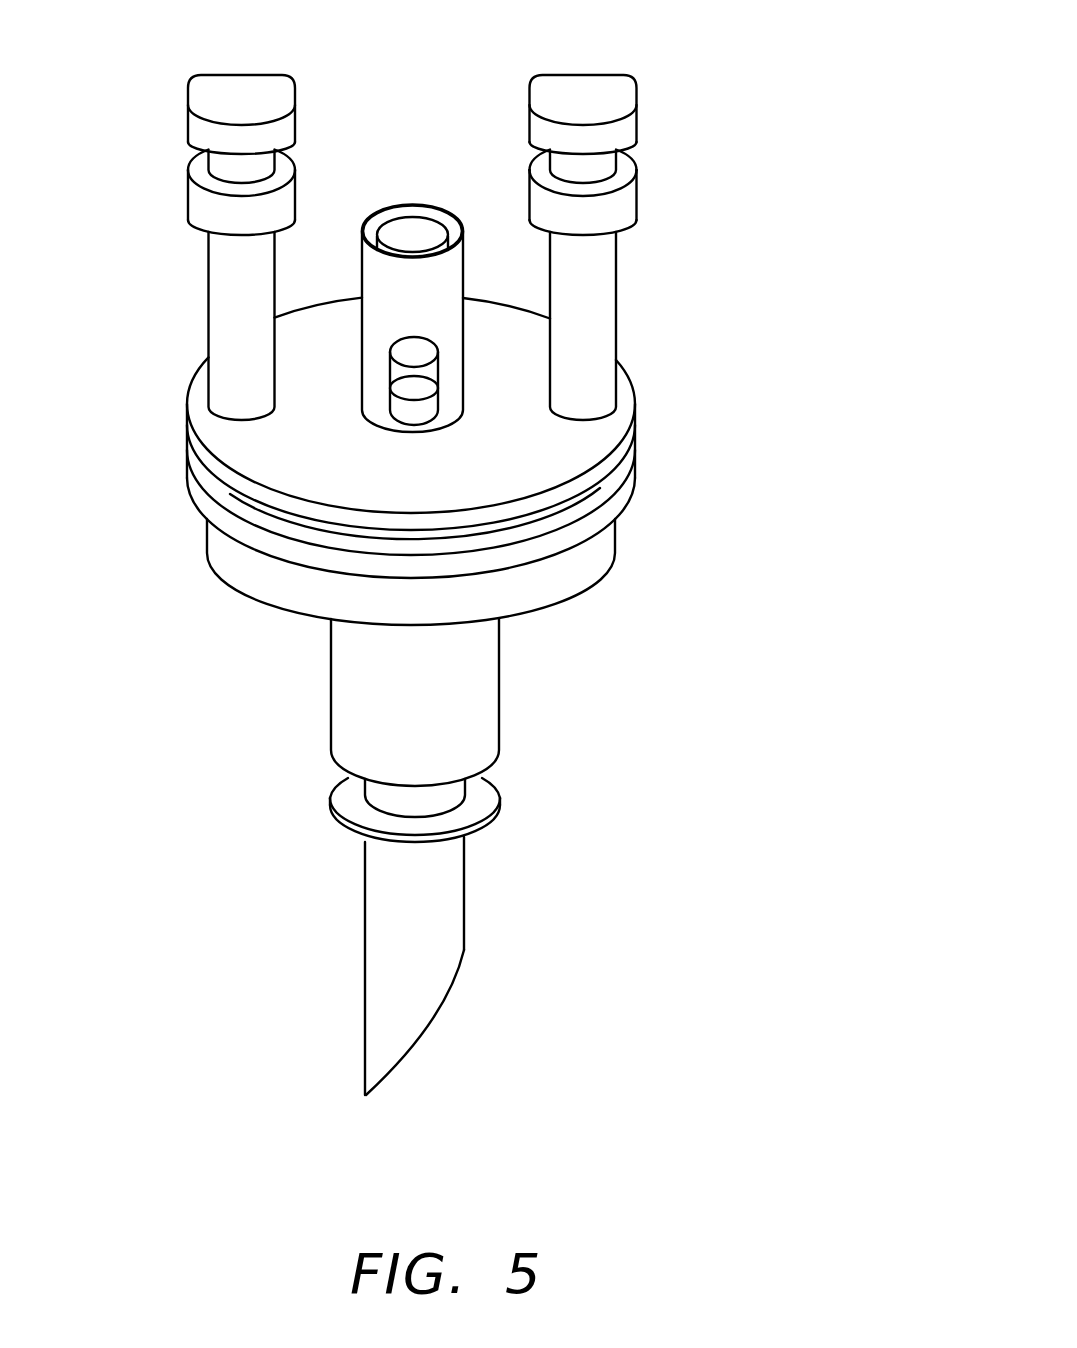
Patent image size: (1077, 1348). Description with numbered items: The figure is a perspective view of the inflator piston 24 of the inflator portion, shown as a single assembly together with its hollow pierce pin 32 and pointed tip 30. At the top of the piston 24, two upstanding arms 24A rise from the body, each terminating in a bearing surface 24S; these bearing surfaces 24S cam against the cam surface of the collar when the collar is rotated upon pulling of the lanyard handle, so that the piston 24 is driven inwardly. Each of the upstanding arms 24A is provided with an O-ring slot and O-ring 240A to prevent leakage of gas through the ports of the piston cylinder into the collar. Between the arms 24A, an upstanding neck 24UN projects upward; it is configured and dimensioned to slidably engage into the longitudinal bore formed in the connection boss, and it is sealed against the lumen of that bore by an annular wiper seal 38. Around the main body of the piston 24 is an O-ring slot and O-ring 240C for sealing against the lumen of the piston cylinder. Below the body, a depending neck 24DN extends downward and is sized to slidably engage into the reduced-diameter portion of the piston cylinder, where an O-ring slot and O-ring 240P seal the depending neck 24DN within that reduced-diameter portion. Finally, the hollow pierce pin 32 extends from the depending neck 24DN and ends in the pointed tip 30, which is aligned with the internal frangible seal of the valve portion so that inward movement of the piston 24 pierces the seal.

The inflator piston 24 is at (598, 557).
The bearing surfaces 24S is at (240, 75).
The O-rings 240A is at (623, 163).
The upstanding arms 24A is at (228, 283).
The annular wiper seal 38 is at (410, 205).
The upstanding neck 24UN is at (463, 282).
The O-ring 240C is at (627, 470).
The depending neck 24DN is at (340, 702).
The O-ring 240P is at (483, 790).
The hollow pierce pin 32 is at (443, 895).
The pointed tip 30 is at (367, 1095).